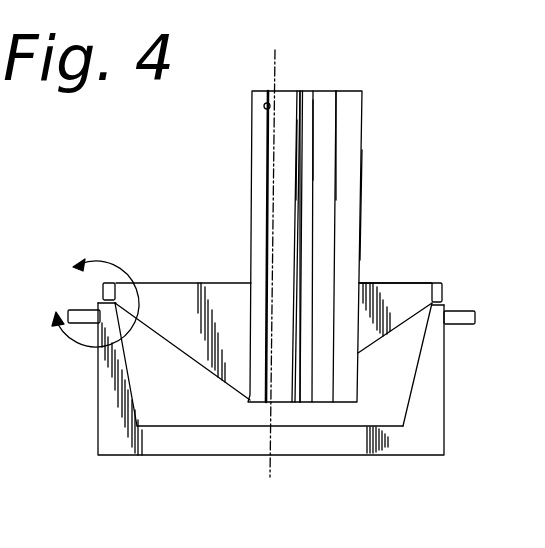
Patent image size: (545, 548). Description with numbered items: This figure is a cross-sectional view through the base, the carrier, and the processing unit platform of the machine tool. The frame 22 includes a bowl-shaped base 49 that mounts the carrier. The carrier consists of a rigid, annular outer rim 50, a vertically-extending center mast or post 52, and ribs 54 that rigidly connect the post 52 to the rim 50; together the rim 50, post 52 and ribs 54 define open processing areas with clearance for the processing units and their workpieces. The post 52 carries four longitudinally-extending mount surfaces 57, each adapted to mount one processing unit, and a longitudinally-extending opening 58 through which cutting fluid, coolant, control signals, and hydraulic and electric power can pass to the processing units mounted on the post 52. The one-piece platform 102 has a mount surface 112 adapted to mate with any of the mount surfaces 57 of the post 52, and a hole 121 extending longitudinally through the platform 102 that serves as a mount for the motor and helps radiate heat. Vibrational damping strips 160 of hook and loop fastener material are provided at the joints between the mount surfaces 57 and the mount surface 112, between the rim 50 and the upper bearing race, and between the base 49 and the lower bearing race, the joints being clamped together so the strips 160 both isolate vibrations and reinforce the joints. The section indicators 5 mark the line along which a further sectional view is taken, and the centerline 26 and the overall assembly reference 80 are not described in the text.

The section line 5- 5 is at (93, 303).
The frame 22 is at (223, 459).
The central axis 26 is at (297, 62).
The bowl-shaped base 49 is at (110, 447).
The outer rim 50 is at (281, 399).
The center mast or post 52 is at (260, 90).
The ribs 54 is at (186, 316).
The mount surfaces 57 is at (382, 202).
The longitudinally-extending opening 58 is at (290, 88).
The assembly 80 is at (2, 545).
The platform 102 is at (372, 255).
The mount surface 112 is at (303, 175).
The hole 121 is at (324, 128).
The strips 160 is at (302, 402).